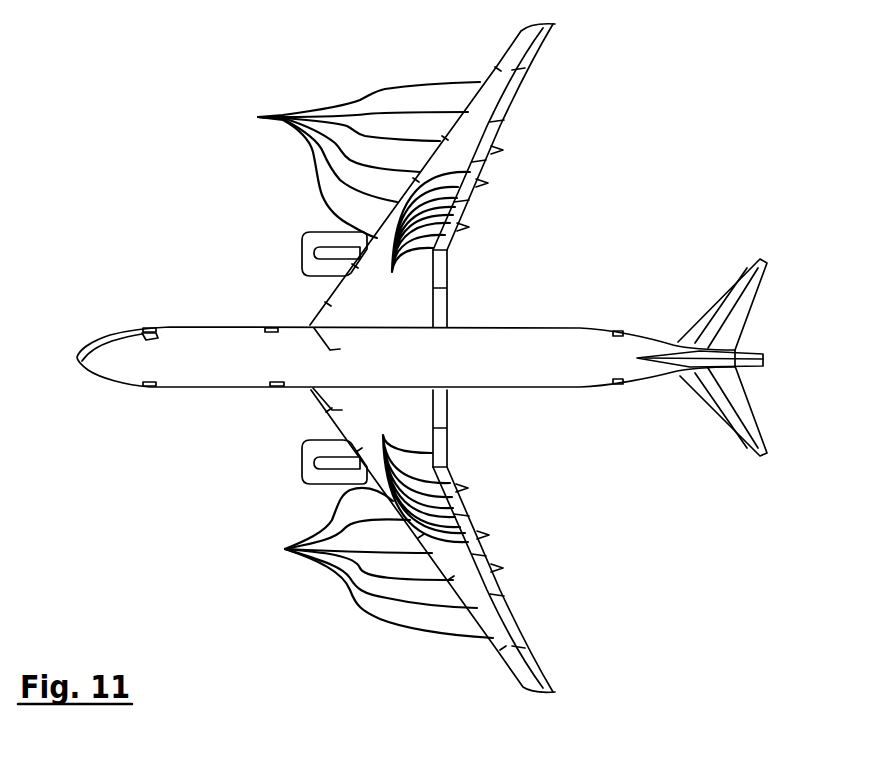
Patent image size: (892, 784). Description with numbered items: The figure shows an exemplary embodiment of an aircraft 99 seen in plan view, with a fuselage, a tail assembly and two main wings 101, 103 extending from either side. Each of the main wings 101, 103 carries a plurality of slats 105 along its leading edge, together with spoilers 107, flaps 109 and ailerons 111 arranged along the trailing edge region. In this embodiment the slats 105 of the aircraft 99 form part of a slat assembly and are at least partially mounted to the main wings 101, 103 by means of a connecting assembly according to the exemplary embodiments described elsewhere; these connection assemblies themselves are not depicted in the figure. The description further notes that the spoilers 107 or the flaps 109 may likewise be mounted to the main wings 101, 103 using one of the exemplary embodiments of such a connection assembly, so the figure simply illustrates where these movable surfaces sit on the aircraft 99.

The aircraft 99 is at (163, 224).
The main wing 101 is at (523, 46).
The main wing 103 is at (523, 676).
The slat 105 is at (340, 433).
The spoiler 107 is at (424, 275).
The flap 109 is at (468, 200).
The aileron 111 is at (503, 110).